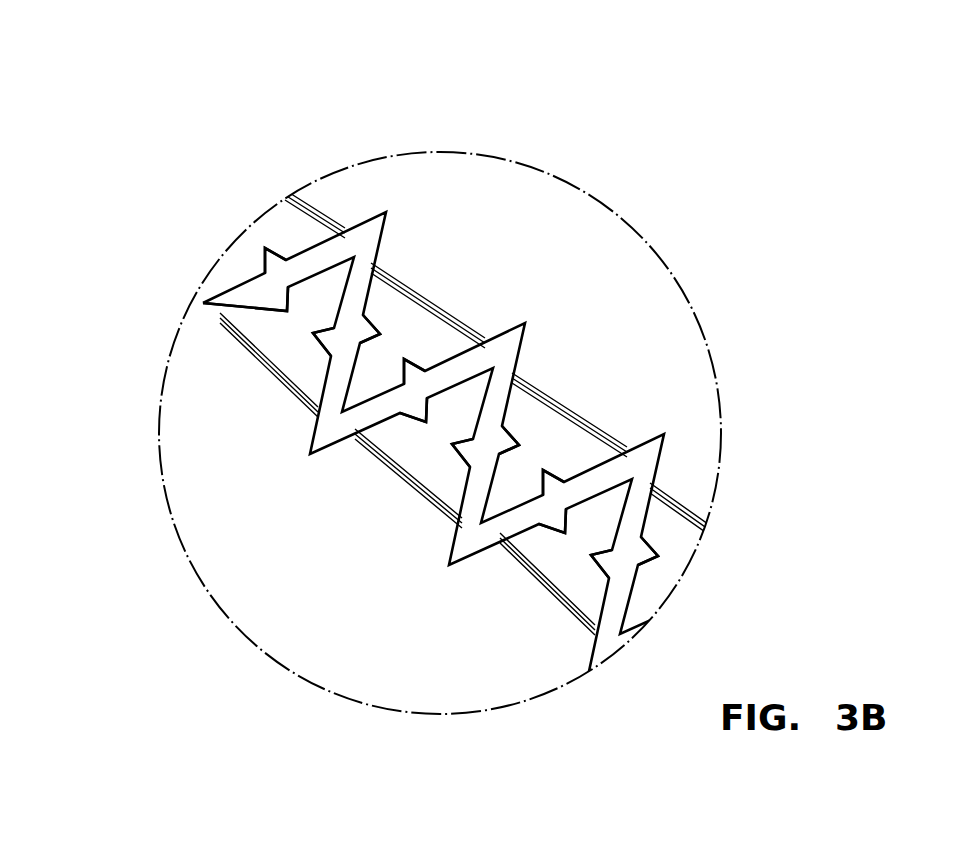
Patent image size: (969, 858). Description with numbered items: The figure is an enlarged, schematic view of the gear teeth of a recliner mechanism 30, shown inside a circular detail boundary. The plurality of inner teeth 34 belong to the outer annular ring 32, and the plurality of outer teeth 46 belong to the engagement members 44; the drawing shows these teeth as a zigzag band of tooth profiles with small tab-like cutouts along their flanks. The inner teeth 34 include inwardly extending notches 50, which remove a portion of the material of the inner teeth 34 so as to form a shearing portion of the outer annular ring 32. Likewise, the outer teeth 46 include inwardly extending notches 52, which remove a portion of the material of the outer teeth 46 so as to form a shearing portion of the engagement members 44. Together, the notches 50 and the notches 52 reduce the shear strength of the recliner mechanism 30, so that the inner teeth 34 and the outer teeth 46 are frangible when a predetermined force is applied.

The recliner mechanism 30 is at (458, 132).
The outer annular ring 32 is at (233, 603).
The inner teeth 34 is at (448, 423).
The engagement members 44 is at (657, 298).
The outer teeth 46 is at (372, 370).
The notches 50 is at (270, 317).
The notches 52 is at (293, 259).